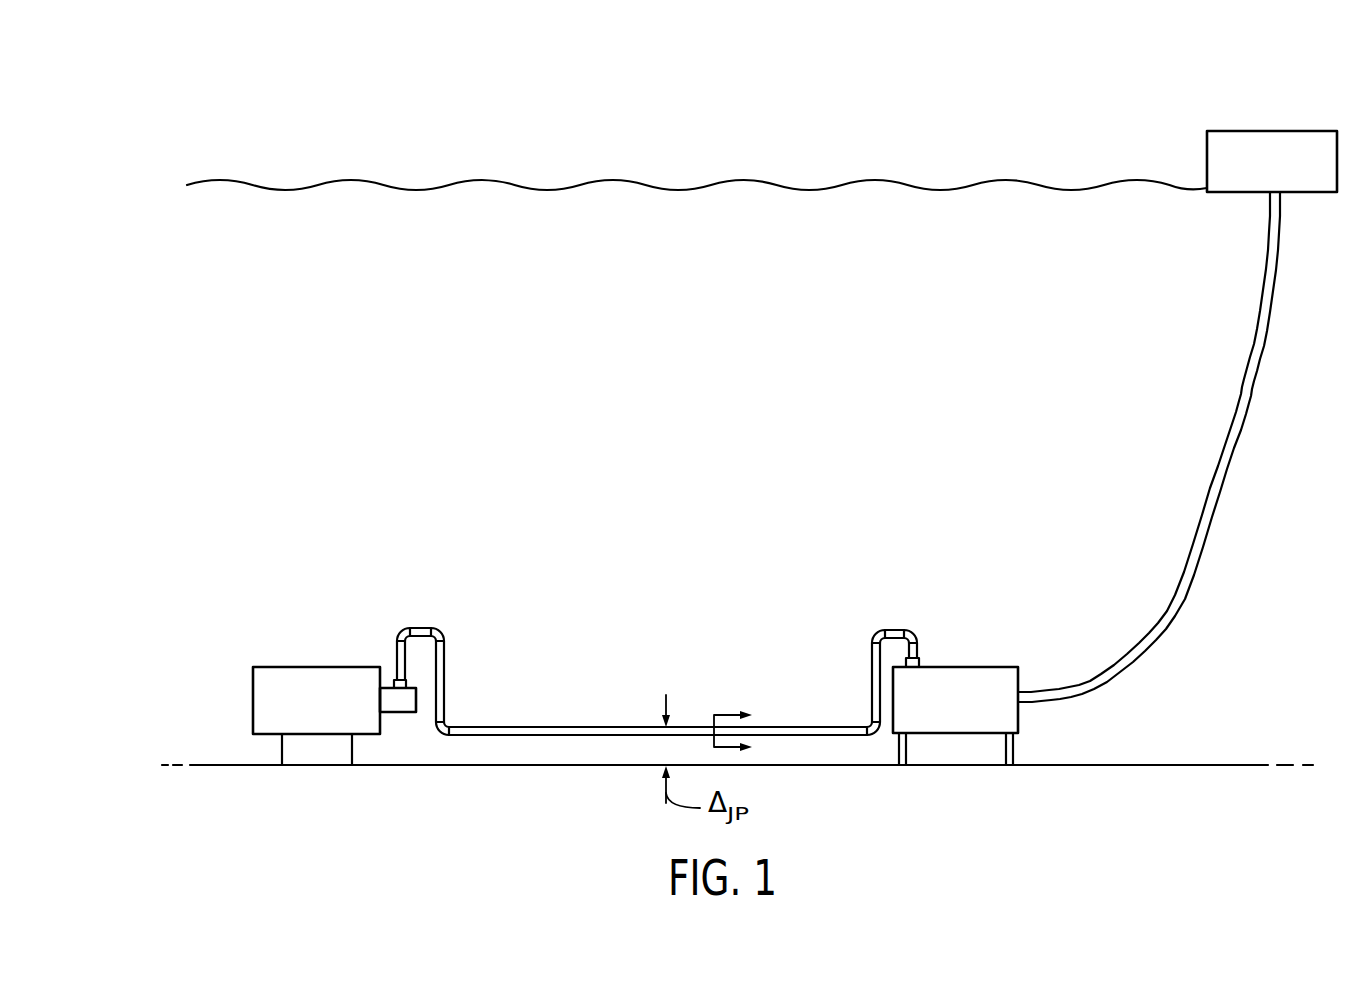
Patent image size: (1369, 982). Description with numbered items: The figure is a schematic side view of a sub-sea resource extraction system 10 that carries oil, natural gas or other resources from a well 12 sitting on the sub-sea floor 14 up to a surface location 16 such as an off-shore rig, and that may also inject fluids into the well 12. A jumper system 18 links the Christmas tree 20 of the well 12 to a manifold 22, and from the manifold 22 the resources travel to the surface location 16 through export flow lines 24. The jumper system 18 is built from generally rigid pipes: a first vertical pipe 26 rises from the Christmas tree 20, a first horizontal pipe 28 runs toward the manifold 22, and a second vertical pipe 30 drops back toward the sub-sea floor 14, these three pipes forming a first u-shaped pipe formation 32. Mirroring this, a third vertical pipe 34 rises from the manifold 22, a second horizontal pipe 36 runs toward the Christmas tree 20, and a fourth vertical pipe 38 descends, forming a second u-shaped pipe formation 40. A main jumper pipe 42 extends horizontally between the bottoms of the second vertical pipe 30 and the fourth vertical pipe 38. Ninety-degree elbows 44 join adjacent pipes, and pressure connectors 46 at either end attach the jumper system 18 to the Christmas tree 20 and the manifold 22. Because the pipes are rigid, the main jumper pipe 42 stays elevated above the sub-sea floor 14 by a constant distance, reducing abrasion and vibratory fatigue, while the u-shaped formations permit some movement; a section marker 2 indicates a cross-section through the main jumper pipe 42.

The sub-sea resource extraction system 10 is at (225, 102).
The well 12 is at (210, 742).
The sub-sea floor 14 is at (1222, 767).
The surface location 16 is at (1273, 130).
The jumper system 18 is at (645, 638).
The Christmas tree 20 is at (277, 667).
The manifold 22 is at (1005, 667).
The export flow lines 24 is at (1247, 417).
The first vertical pipe 26 is at (397, 658).
The first horizontal pipe 28 is at (420, 630).
The second vertical pipe 30 is at (442, 683).
The first u-shaped pipe formation 32 is at (413, 632).
The third vertical pipe 34 is at (918, 648).
The second horizontal pipe 36 is at (893, 632).
The fourth vertical pipe 38 is at (872, 678).
The second u-shaped pipe formation 40 is at (897, 617).
The main jumper pipe 42 is at (600, 727).
The 90-degree elbows 44 is at (398, 632).
The pressure connectors 46 is at (403, 690).
The section line 2- 2 is at (741, 725).